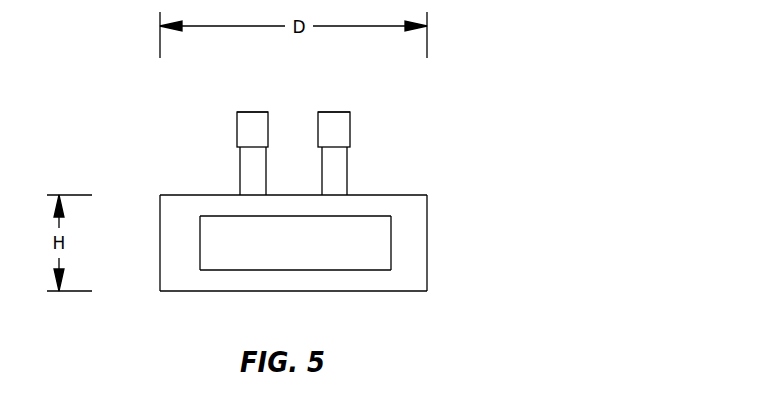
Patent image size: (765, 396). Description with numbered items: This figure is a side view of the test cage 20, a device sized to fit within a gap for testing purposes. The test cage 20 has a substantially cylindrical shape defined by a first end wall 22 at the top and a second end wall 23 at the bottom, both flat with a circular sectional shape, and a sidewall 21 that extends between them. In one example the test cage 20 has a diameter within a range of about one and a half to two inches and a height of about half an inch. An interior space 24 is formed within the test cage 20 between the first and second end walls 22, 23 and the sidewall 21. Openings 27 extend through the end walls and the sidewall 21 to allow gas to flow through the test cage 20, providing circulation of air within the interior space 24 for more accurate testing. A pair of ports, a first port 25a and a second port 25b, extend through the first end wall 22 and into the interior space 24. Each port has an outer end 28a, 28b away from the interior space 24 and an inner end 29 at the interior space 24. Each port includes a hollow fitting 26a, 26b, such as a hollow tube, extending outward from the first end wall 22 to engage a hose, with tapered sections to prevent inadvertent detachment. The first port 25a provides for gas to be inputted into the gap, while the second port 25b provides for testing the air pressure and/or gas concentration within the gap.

The test cage 20 is at (134, 97).
The sidewall 21 is at (160, 245).
The first end wall 22 is at (408, 195).
The second end wall 23 is at (402, 291).
The interior space 24 is at (378, 251).
The first port 25a is at (250, 112).
The second port 25b is at (342, 112).
The hollow fitting 26a is at (247, 170).
The hollow fitting 26b is at (340, 170).
The openings 27 is at (285, 258).
The outer end 28a is at (258, 112).
The outer end 28b is at (332, 112).
The inner end 29 is at (335, 220).